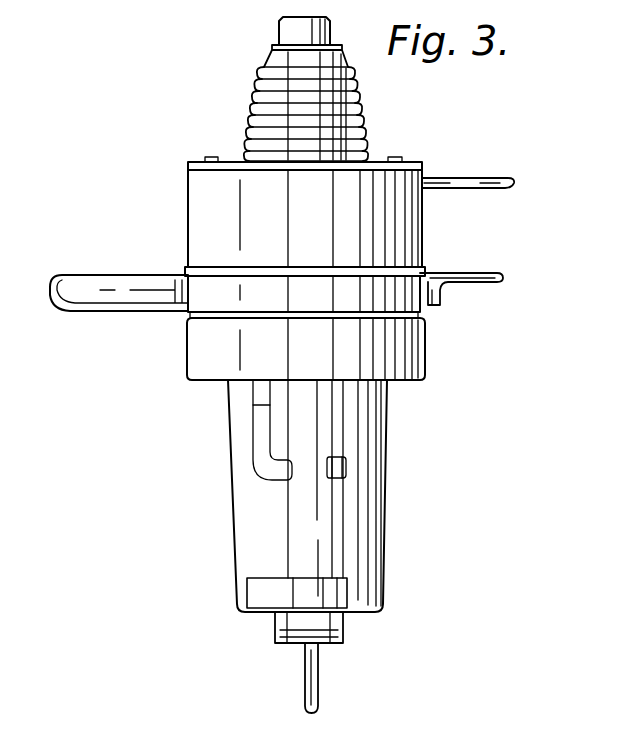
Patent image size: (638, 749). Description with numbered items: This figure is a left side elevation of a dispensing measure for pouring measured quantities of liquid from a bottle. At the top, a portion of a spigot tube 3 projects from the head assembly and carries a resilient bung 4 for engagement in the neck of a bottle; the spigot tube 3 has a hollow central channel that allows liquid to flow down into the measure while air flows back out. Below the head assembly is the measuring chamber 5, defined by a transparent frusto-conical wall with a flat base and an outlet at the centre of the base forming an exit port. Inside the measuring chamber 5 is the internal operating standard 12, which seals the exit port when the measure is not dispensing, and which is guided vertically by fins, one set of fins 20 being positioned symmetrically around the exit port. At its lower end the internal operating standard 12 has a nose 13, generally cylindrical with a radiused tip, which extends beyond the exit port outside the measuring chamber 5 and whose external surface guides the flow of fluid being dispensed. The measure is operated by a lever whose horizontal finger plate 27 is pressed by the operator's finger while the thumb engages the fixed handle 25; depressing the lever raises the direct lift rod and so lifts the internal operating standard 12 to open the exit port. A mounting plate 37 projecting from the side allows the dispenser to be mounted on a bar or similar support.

The spigot tube 3 is at (293, 32).
The resilient bung 4 is at (352, 108).
The measuring chamber 5 is at (388, 446).
The internal operating standard 12 is at (318, 503).
The nose 13 is at (305, 683).
The fins 20 is at (253, 596).
The fixed handle 25 is at (497, 273).
The finger plate 27 is at (490, 178).
The mounting plate 37 is at (100, 285).